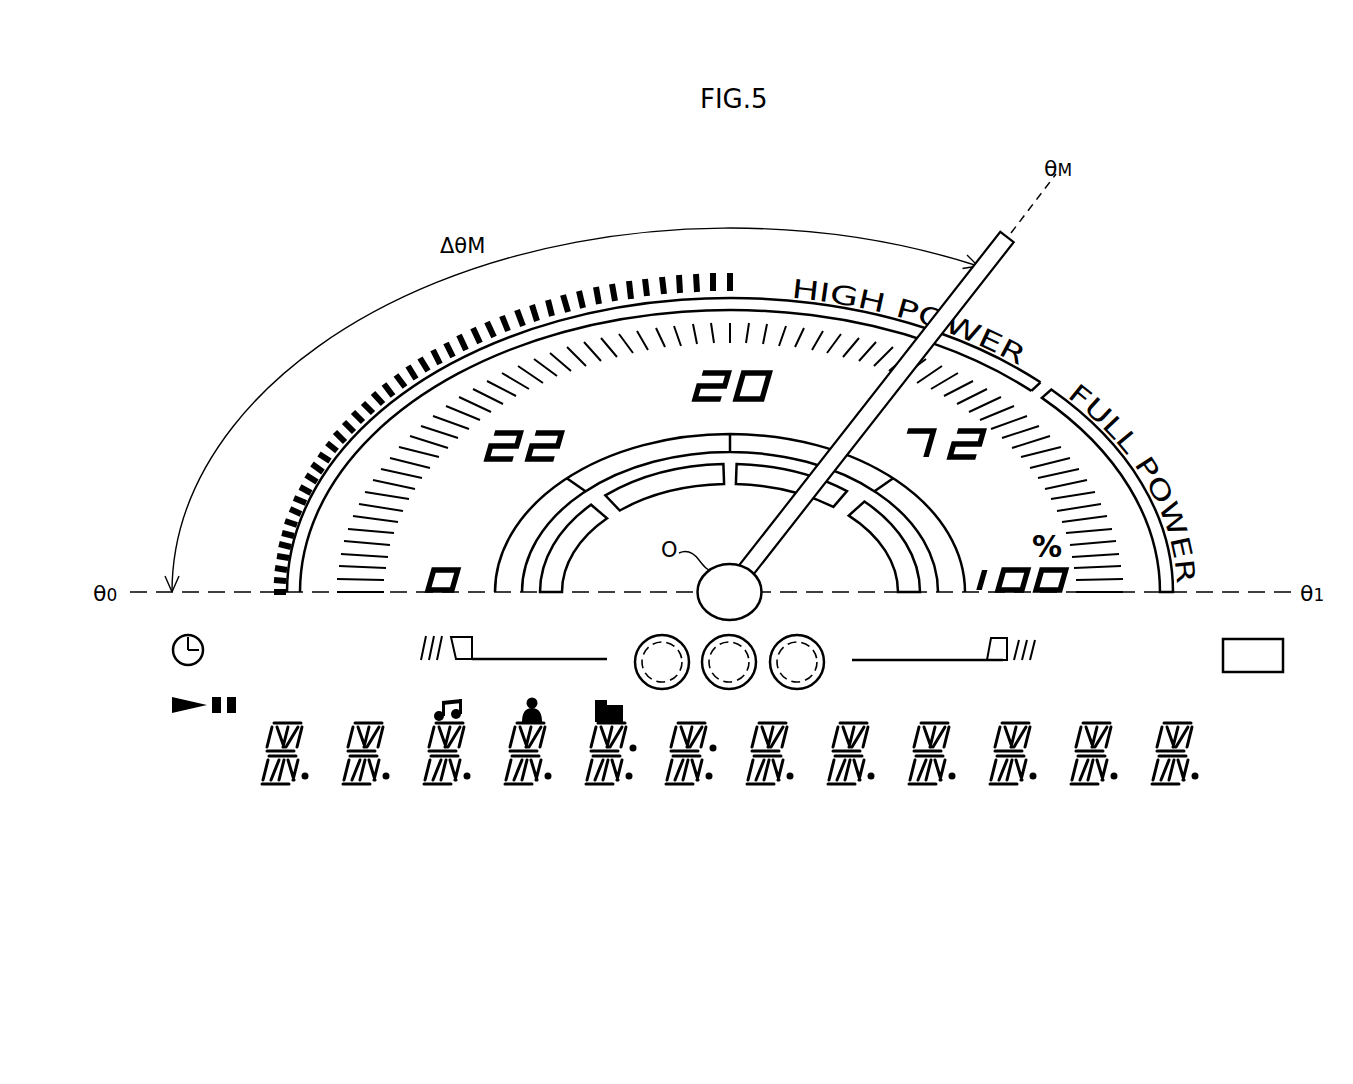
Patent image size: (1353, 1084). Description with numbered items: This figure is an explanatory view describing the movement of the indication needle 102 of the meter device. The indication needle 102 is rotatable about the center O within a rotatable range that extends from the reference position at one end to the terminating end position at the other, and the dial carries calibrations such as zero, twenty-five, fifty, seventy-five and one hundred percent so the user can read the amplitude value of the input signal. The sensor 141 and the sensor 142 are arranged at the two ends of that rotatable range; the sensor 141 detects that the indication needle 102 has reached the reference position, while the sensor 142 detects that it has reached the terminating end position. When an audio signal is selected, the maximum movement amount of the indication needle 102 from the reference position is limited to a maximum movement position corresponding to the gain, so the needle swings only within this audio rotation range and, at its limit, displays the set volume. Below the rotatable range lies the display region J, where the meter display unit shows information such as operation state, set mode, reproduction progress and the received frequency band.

The indication needle 102 is at (982, 279).
The sensor 141 is at (562, 592).
The sensor 142 is at (938, 592).
The display region J is at (1298, 811).